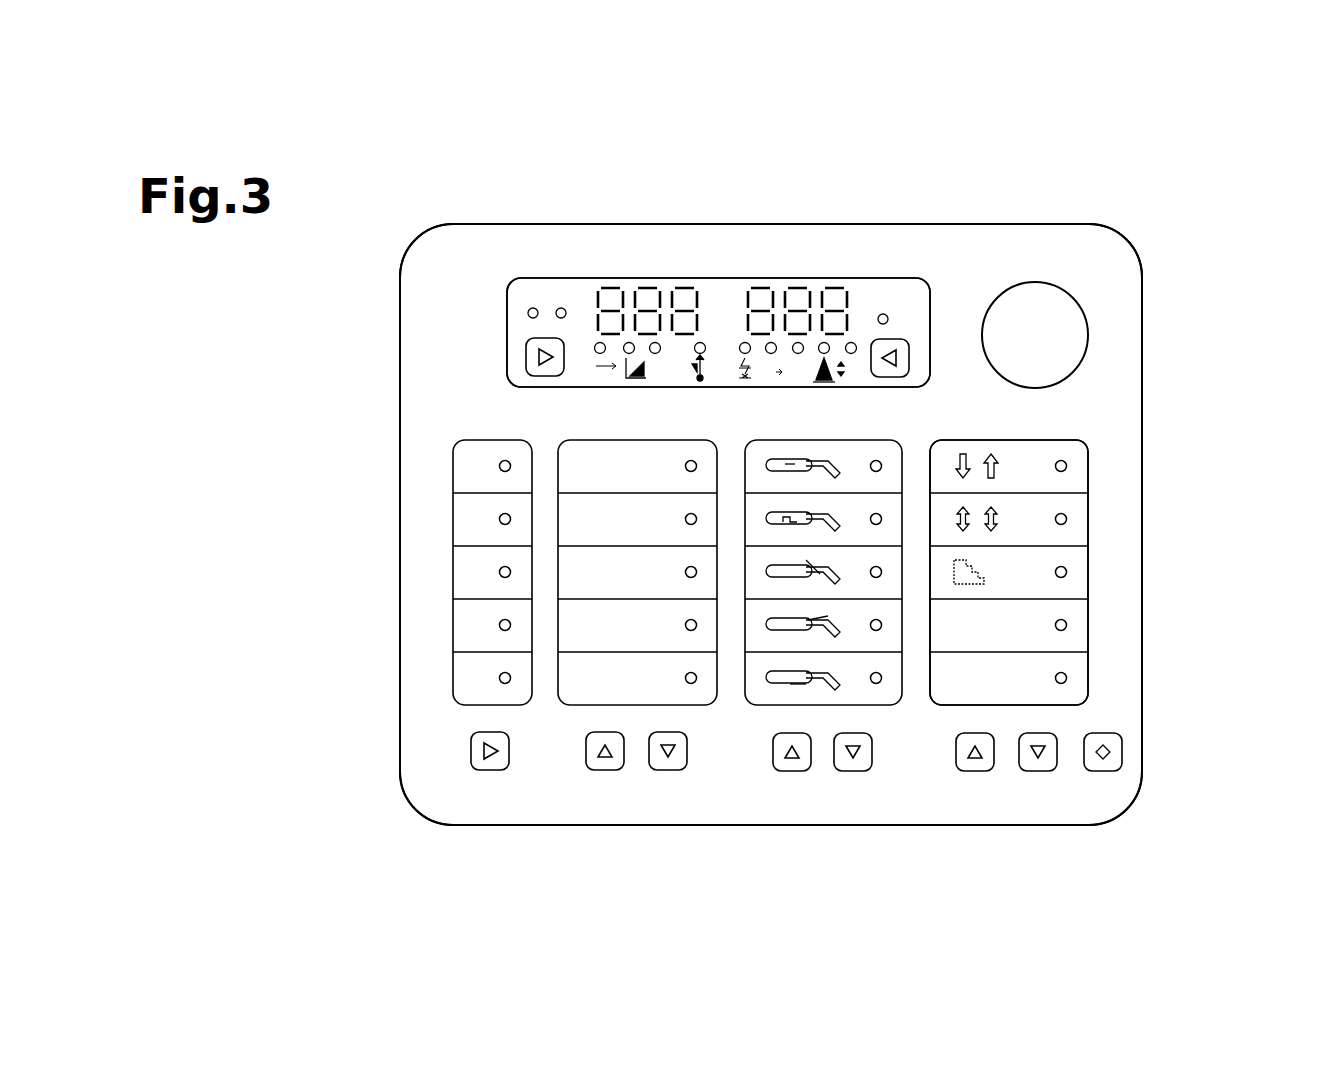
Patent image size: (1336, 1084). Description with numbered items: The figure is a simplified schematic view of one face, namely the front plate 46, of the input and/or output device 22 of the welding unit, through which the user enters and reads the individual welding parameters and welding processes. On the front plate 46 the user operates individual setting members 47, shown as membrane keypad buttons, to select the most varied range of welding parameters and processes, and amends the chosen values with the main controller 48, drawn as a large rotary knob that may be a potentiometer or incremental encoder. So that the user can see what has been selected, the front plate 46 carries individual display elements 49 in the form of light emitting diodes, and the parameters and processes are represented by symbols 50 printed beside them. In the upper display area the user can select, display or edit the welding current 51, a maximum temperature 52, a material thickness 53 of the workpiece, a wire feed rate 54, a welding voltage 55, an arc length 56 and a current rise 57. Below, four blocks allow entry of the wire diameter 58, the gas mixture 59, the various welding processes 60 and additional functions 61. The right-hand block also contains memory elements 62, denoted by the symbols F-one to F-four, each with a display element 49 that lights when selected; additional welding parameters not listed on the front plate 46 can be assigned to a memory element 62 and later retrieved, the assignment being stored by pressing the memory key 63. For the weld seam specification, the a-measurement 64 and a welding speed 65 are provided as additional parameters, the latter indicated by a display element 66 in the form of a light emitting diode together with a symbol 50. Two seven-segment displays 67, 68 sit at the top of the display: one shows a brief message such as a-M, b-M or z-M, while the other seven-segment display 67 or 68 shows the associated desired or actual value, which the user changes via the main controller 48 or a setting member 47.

The input and/or output device 22 is at (1183, 190).
The front plate 46 is at (1048, 246).
The setting members 47 is at (1090, 281).
The main controller 48 is at (1060, 337).
The display elements 49 is at (822, 212).
The symbols 50 is at (527, 270).
The welding current 51 is at (643, 374).
The maximum temperature 52 is at (694, 356).
The material thickness 53 is at (738, 355).
The wire feed rate 54 is at (758, 363).
The welding voltage 55 is at (786, 363).
The arc length 56 is at (813, 363).
The current rise 57 is at (858, 362).
The wire diameter 58 is at (427, 565).
The gas mixture 59 is at (555, 722).
The welding processes 60 is at (748, 722).
The additional functions 61 is at (1117, 538).
The memory element 62 is at (500, 272).
The memory key 63 is at (1107, 753).
The a-measurement 64 is at (629, 342).
The welding speed 65 is at (599, 342).
The display element 66 is at (553, 390).
The 7-segment display 67 is at (667, 266).
The 7-segment display 68 is at (779, 266).